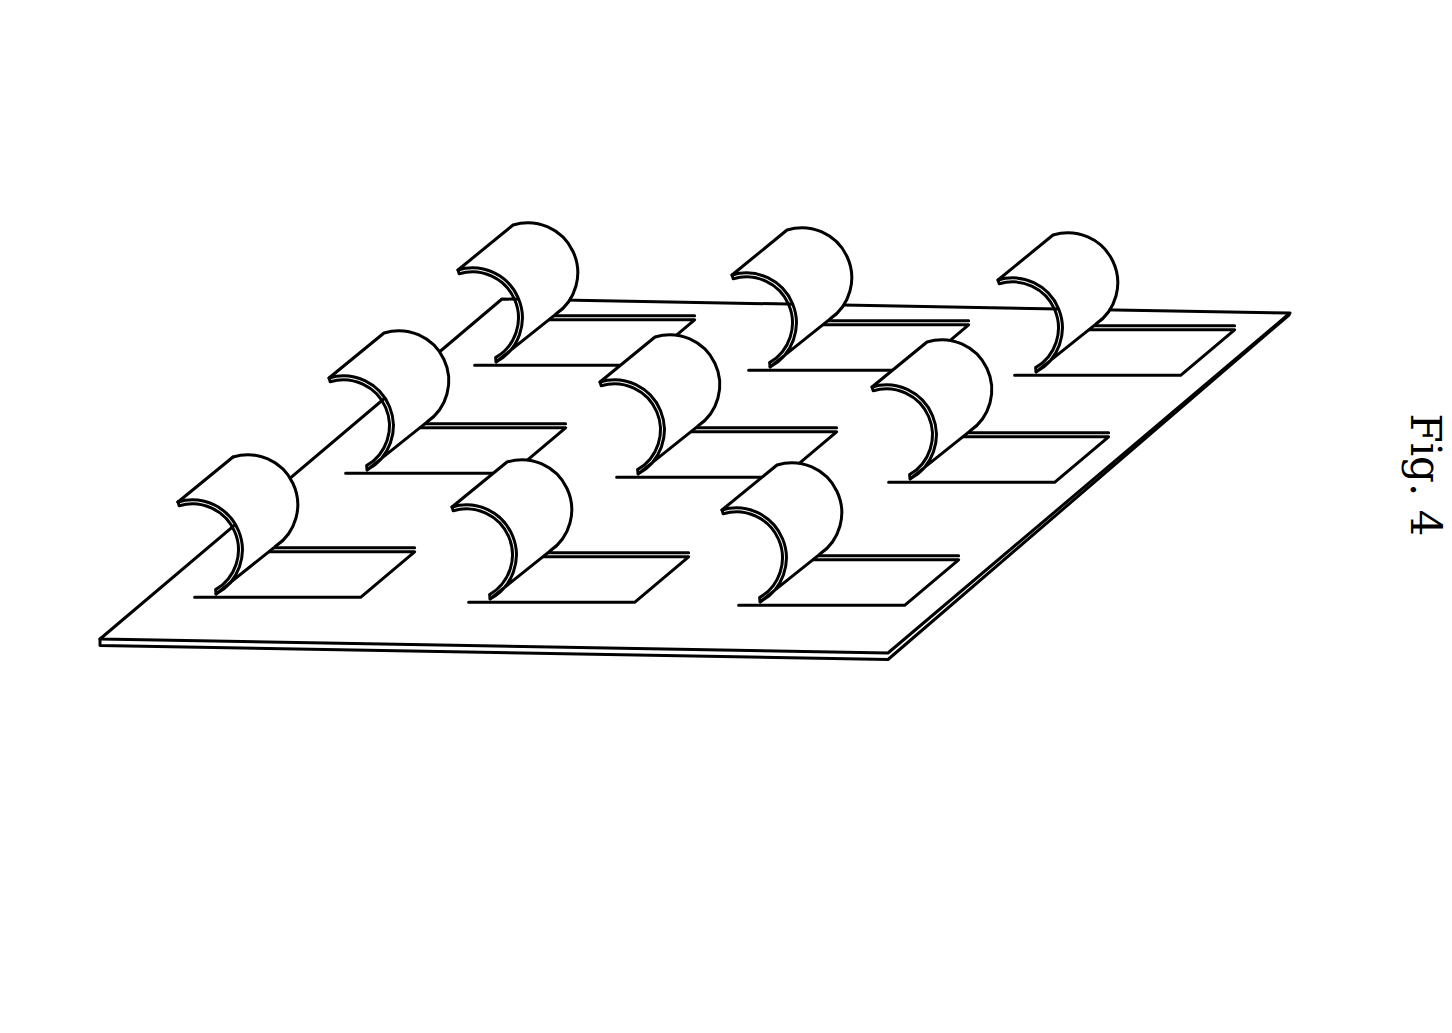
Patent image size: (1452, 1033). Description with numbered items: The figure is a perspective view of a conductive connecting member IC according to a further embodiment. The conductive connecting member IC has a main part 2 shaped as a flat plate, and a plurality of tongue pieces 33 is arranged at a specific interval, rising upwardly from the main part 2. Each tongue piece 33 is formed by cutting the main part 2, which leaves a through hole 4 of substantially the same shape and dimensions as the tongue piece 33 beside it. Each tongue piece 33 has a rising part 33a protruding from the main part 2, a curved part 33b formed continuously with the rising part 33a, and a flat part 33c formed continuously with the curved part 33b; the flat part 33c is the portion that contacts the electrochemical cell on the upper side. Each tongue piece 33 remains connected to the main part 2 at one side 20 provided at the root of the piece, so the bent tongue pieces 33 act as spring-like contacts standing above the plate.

The conductive connecting member IC is at (695, 442).
The main part 2 is at (1150, 414).
The through hole 4 is at (884, 336).
The one side 20 is at (513, 590).
The tongue piece 33 is at (595, 242).
The rising part 33a is at (265, 553).
The curved part 33b is at (271, 489).
The flat part 33c is at (214, 482).